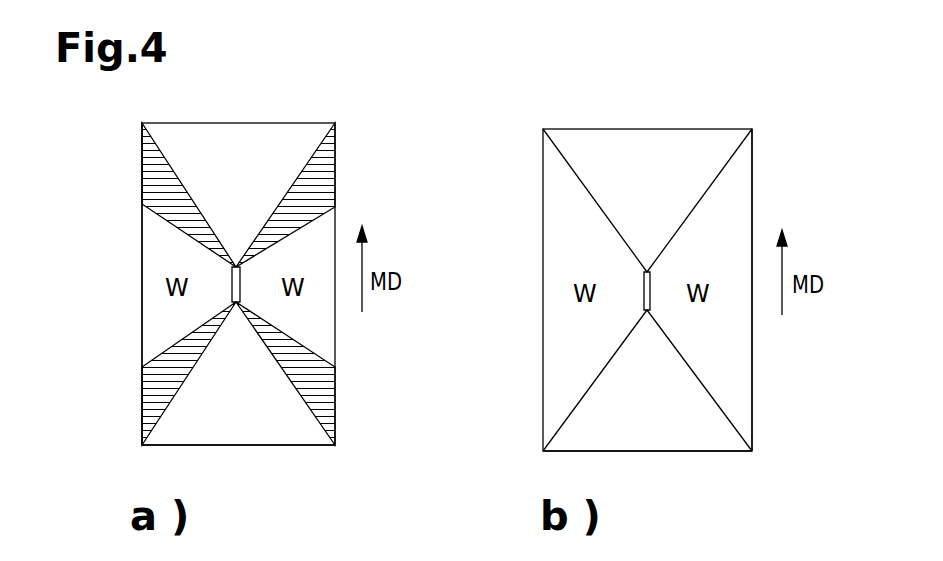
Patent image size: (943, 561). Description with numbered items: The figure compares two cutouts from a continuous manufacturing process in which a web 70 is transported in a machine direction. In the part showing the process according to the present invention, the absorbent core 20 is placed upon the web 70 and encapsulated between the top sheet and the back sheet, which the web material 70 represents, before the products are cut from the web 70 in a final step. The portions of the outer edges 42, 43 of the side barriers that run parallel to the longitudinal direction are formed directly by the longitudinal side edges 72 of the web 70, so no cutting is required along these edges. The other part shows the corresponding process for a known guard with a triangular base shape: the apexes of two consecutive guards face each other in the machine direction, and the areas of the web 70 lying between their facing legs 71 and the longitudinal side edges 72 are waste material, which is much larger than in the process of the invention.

In FIG. 4a, the absorbent core 20 is at (233, 148).
In FIG. 4b, the absorbent core 20 is at (660, 147).
In FIG. 4a, the outer edge of side barrier 42 is at (336, 168).
In FIG. 4a, the outer edge of side barrier 43 is at (142, 166).
In FIG. 4a, the continuous web 70 is at (336, 430).
In FIG. 4b, the continuous web 70 is at (752, 437).
In FIG. 4a, the facing legs 71 is at (175, 226).
In FIG. 4b, the facing legs 71 is at (585, 190).
In FIG. 4a, the longitudinal side edges of the web 72 is at (142, 306).
In FIG. 4b, the longitudinal side edges of the web 72 is at (752, 352).